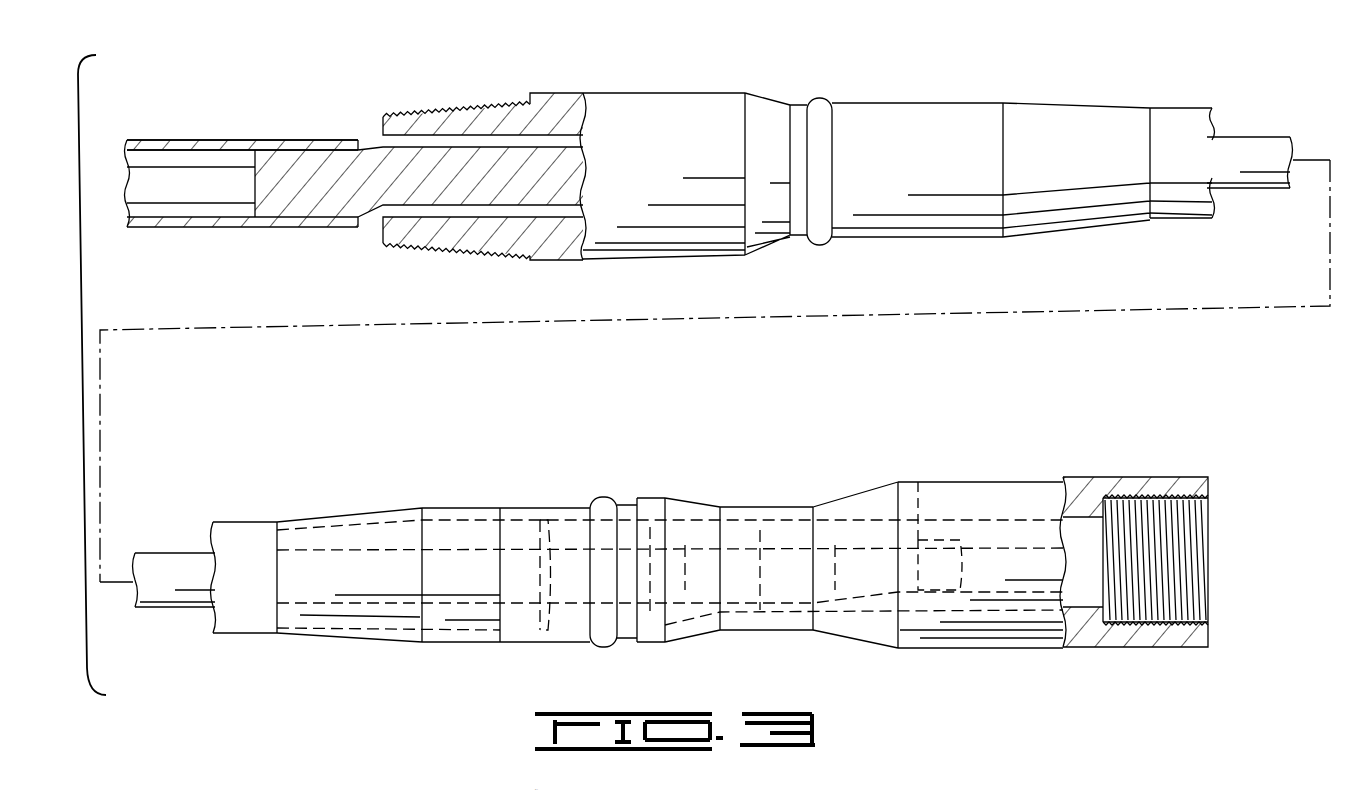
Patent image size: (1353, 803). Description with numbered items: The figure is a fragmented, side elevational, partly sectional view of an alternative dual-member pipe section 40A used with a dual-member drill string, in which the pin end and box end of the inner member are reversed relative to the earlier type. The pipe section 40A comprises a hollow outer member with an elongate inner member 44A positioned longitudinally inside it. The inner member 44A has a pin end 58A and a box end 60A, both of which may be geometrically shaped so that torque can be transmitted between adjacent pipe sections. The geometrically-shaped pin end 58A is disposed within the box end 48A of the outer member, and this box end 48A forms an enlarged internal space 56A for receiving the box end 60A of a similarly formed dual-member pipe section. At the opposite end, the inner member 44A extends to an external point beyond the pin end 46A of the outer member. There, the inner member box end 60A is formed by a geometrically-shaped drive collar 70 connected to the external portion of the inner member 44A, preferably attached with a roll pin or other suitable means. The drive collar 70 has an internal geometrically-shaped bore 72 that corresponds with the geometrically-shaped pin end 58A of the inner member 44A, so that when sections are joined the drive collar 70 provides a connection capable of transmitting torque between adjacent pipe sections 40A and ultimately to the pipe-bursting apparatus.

The dual-member pipe section 40A is at (790, 61).
The inner member 44A is at (1243, 136).
The pin end of the outer member 46A is at (468, 246).
The box end of the outer member 48A is at (1141, 477).
The enlarged internal space 56A is at (1086, 588).
The pin end of the inner member 58A is at (918, 540).
The box end of the inner member 60A is at (182, 227).
The drive collar 70 is at (313, 140).
The internal geometrically-shaped bore 72 is at (200, 186).